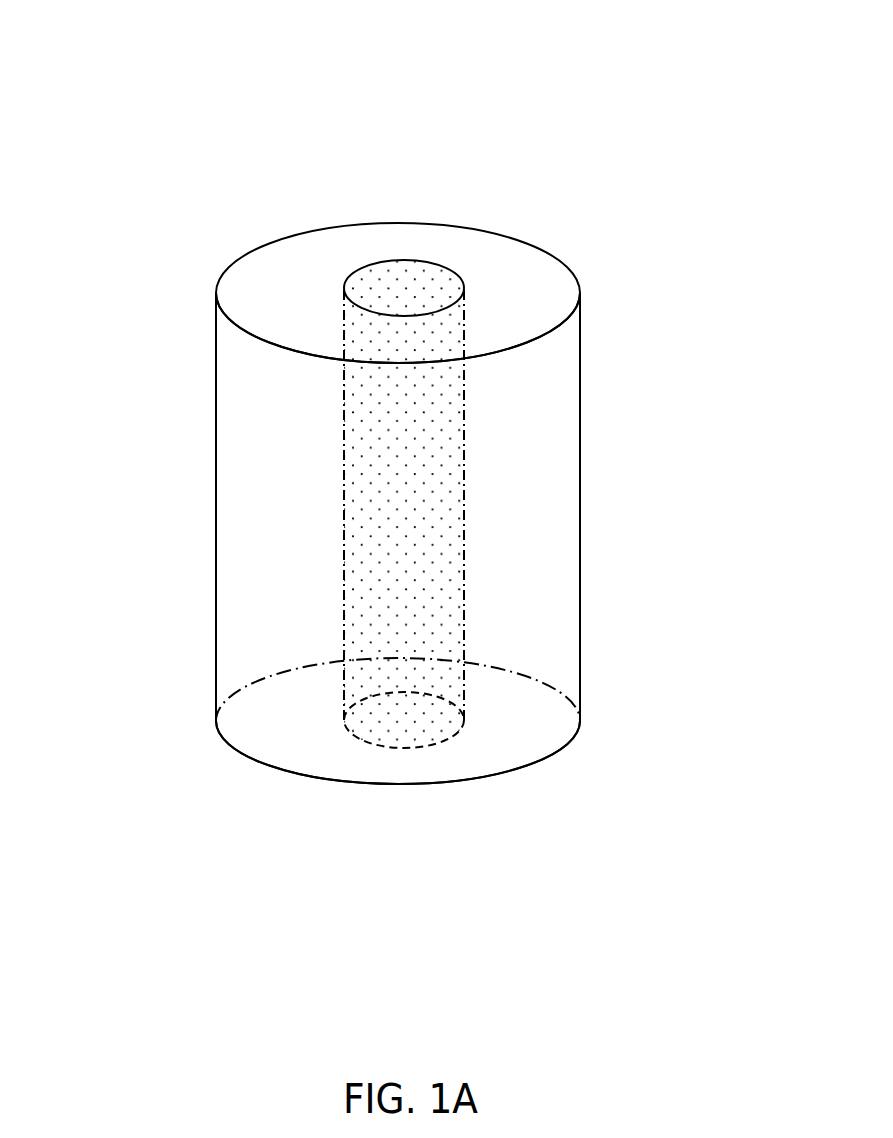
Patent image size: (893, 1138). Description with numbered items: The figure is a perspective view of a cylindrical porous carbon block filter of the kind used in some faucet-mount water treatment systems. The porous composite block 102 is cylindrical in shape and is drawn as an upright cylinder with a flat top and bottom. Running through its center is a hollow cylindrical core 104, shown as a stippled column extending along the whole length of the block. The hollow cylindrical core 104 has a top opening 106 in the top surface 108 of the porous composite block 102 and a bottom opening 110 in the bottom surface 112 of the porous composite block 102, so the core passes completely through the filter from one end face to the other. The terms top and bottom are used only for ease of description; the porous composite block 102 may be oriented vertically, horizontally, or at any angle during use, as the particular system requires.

The porous composite block 102 is at (455, 160).
The hollow cylindrical core 104 is at (343, 497).
The top opening 106 is at (427, 289).
The top surface 108 is at (273, 319).
The bottom opening 110 is at (427, 720).
The bottom surface 112 is at (328, 750).